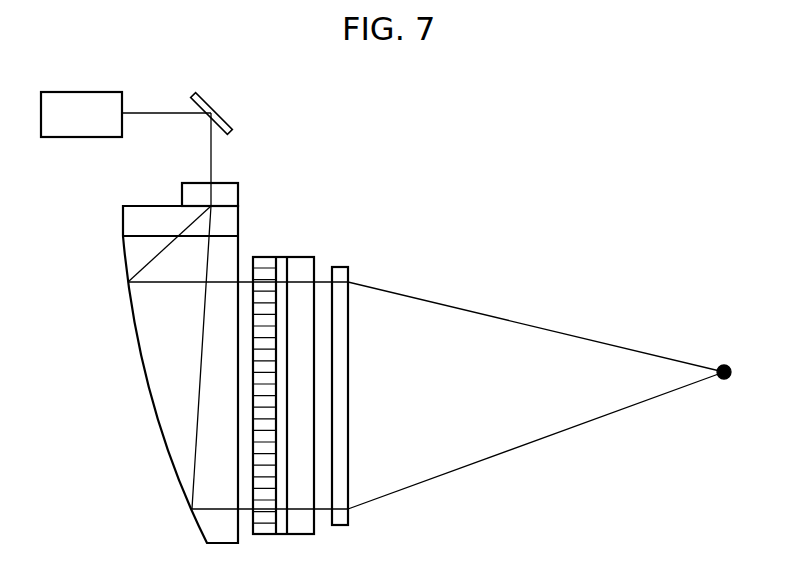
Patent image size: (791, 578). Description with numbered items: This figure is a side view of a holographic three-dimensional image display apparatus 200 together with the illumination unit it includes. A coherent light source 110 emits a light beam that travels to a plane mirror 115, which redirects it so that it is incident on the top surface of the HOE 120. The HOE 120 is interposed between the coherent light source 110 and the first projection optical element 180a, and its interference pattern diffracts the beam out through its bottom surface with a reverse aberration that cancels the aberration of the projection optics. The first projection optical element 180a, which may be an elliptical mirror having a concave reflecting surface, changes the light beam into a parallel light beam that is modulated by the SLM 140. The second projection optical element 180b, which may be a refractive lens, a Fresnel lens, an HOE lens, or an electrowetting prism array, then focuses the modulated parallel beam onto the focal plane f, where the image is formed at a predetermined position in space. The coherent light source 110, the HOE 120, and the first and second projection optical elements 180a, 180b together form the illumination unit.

The coherent light source 110 is at (92, 92).
The plane mirror 115 is at (223, 113).
The HOE 120 is at (228, 182).
The SLM 140 is at (301, 253).
The first projection optical element 180a is at (113, 457).
The second projection optical element 180b is at (343, 265).
The holographic 3D image display apparatus 200 is at (130, 374).
The focal plane f is at (539, 395).